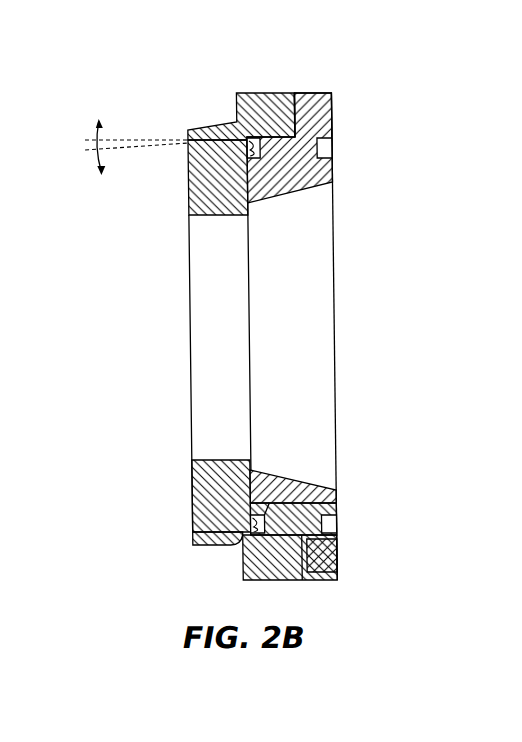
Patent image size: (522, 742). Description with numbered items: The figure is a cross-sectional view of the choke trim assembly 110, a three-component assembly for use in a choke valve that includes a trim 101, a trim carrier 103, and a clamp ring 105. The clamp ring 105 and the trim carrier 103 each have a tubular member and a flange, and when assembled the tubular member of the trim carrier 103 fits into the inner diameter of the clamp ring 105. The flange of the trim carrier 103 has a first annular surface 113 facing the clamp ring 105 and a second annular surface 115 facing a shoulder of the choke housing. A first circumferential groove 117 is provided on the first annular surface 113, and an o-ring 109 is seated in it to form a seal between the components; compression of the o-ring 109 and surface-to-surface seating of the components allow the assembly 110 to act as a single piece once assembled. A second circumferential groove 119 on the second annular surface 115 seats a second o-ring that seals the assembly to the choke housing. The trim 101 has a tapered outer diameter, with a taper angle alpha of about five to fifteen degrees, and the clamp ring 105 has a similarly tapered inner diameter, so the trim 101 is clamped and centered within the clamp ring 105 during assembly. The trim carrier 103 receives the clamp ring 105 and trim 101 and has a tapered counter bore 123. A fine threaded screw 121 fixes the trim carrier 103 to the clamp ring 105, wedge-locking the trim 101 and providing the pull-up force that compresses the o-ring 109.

The choke trim assembly 110 is at (144, 72).
The trim 101 is at (188, 190).
The trim carrier 103 is at (331, 172).
The clamp ring 105 is at (237, 108).
The o-ring 109 is at (233, 540).
The first annular surface 113 is at (291, 92).
The second annular surface 115 is at (333, 108).
The first circumferential groove 117 is at (283, 506).
The second circumferential groove 119 is at (333, 148).
The fine threaded screw 121 is at (328, 556).
The tapered counter bore 123 is at (293, 477).